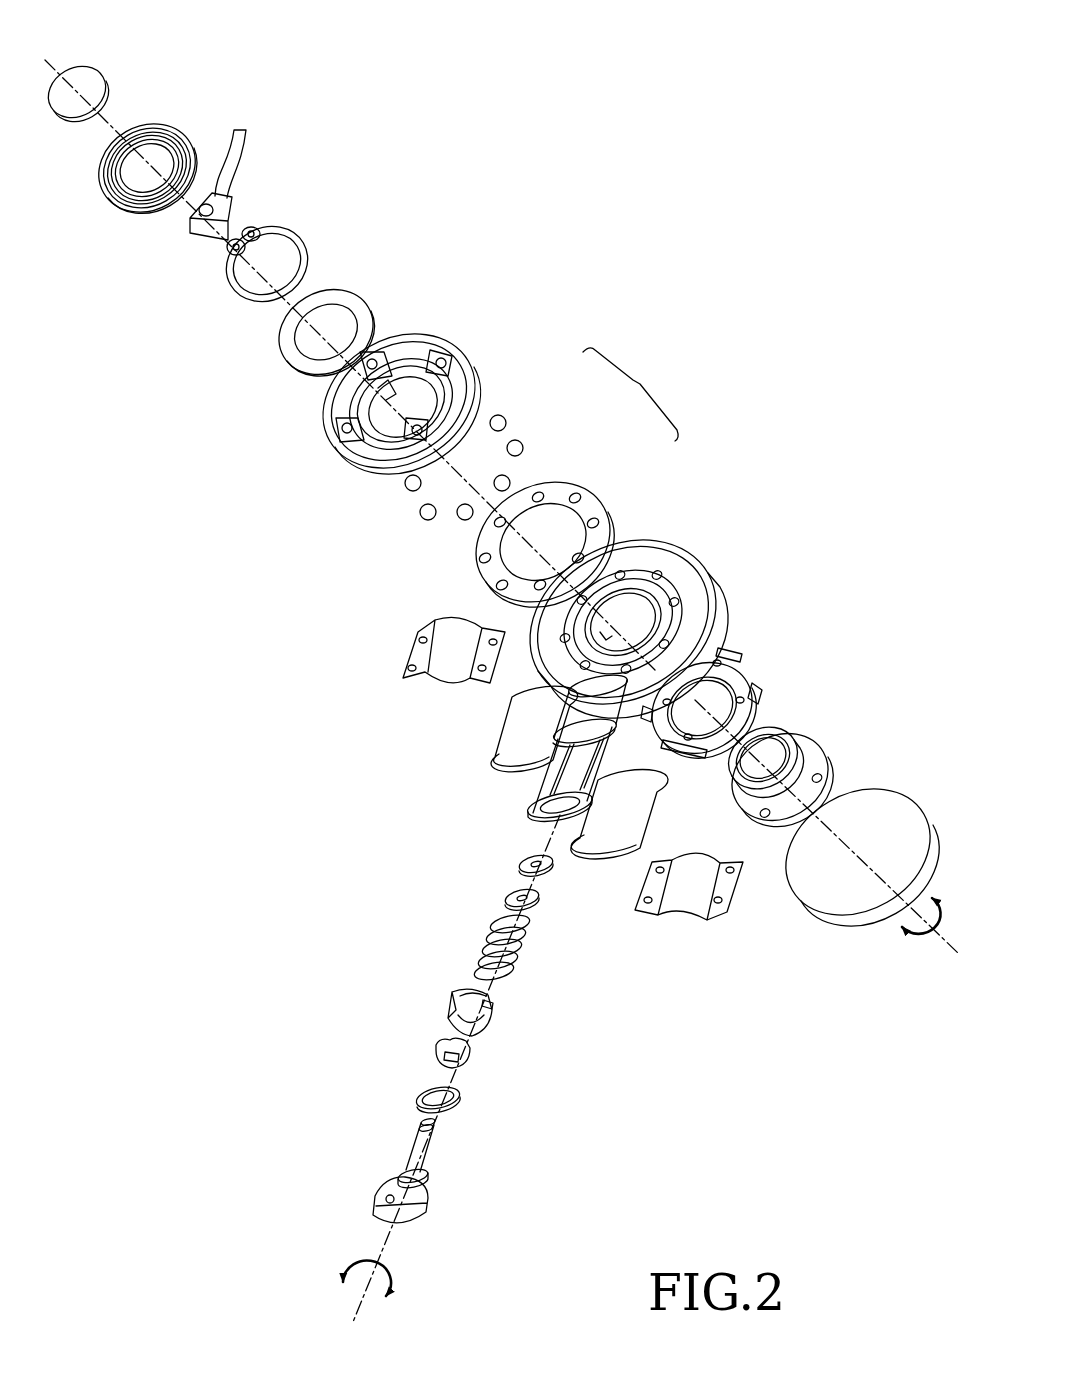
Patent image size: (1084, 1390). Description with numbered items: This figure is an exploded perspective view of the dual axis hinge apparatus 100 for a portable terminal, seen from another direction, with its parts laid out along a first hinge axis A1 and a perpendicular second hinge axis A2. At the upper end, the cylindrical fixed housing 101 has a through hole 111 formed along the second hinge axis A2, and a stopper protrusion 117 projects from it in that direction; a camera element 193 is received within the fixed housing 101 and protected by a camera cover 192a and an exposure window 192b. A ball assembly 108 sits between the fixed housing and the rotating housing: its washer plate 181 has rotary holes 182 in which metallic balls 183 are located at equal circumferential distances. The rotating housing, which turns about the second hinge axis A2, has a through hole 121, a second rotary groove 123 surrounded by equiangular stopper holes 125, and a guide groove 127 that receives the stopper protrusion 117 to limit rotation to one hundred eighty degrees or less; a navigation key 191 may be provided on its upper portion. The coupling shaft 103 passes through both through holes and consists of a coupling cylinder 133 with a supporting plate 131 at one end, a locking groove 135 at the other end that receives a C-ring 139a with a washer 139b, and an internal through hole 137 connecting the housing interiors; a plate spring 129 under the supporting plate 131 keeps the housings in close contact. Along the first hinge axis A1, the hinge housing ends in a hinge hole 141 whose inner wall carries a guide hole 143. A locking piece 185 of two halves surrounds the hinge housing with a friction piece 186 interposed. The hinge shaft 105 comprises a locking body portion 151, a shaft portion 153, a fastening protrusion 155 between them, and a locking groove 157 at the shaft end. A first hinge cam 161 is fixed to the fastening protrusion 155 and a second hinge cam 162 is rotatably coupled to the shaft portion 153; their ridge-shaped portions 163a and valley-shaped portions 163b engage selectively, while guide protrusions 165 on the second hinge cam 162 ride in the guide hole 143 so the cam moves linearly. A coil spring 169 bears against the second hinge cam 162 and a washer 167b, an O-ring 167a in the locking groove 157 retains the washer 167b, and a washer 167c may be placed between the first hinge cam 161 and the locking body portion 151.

The dual axis hinge apparatus 100 is at (698, 135).
The fixed housing 101 is at (416, 399).
The coupling shaft 103 is at (796, 755).
The hinge shaft 105 is at (407, 1168).
The ball assembly 108 is at (530, 487).
The through hole 111 is at (393, 428).
The stopper protrusion 117 is at (413, 382).
The through hole 121 is at (593, 605).
The second rotary groove 123 is at (660, 588).
The stopper holes 125 is at (658, 574).
The guide groove 127 is at (654, 602).
The plate spring 129 is at (750, 655).
The supporting plate 131 is at (825, 768).
The coupling cylinder 133 is at (802, 758).
The locking groove 135 is at (760, 797).
The through hole 137 is at (772, 747).
The C-ring 139a is at (300, 235).
The washer 139b is at (365, 283).
The hinge hole 141 is at (553, 808).
The guide hole 143 is at (529, 793).
The locking body portion 151 is at (417, 1205).
The shaft portion 153 is at (428, 1140).
The fastening protrusion 155 is at (422, 1180).
The locking groove 157 is at (432, 1123).
The first hinge cam 161 is at (455, 1044).
The second hinge cam 162 is at (478, 1002).
The ridge-shaped portions 163a is at (465, 1043).
The valley-shaped portions 163b is at (485, 1010).
The guide protrusions 165 is at (488, 1000).
The O-ring 167a is at (517, 851).
The washer 167b is at (503, 886).
The washer 167c is at (408, 1088).
The coil spring 169 is at (475, 940).
The washer plate 181 is at (521, 527).
The rotary holes 182 is at (486, 560).
The balls 183 is at (519, 414).
The locking piece 185 is at (400, 654).
The friction piece 186 is at (488, 740).
The navigation key 191 is at (867, 927).
The camera cover 192a is at (178, 110).
The exposure window 192b is at (103, 64).
The camera element 193 is at (239, 190).
The first hinge axis A1 is at (362, 1308).
The second hinge axis A2 is at (945, 943).